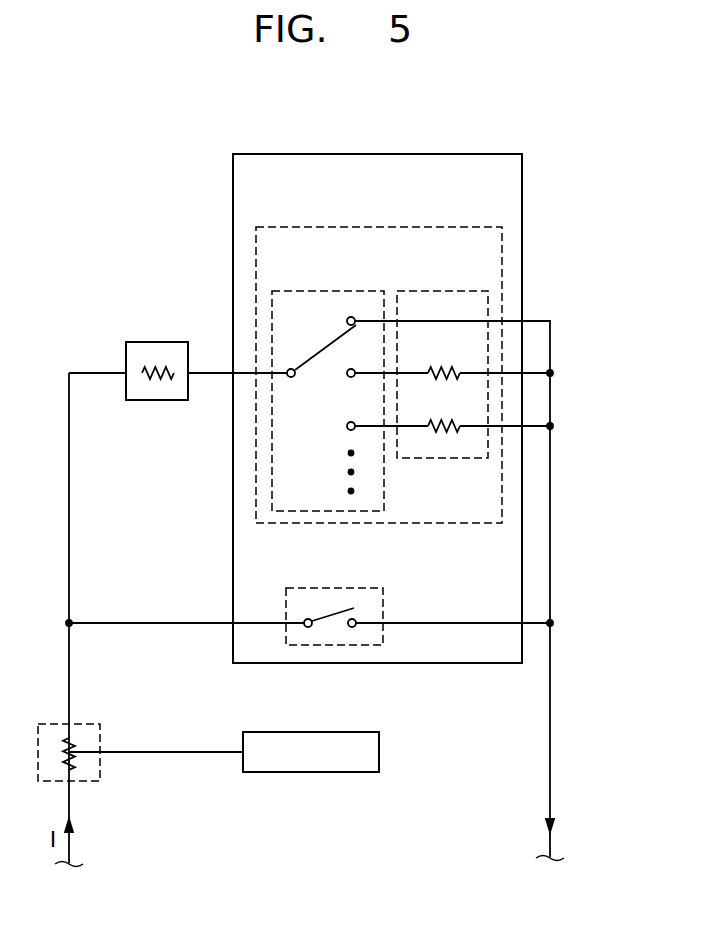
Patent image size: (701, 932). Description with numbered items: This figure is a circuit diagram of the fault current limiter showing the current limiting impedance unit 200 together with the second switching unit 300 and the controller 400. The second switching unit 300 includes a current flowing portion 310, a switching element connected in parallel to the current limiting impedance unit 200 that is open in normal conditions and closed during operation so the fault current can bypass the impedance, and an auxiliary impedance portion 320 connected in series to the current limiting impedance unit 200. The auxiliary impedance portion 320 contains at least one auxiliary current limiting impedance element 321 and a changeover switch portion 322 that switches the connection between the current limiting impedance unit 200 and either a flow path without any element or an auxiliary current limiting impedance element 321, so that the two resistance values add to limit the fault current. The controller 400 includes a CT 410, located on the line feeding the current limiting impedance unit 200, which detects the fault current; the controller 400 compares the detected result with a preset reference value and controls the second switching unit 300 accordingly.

The second switching unit 300 is at (377, 154).
The auxiliary impedance portion 320 is at (377, 227).
The changeover switch portion 322 is at (327, 291).
The auxiliary current limiting impedance element 321 is at (443, 291).
The current flowing portion 310 is at (334, 588).
The current limiting impedance unit 200 is at (157, 342).
The CT 410 is at (85, 724).
The controller 400 is at (311, 732).